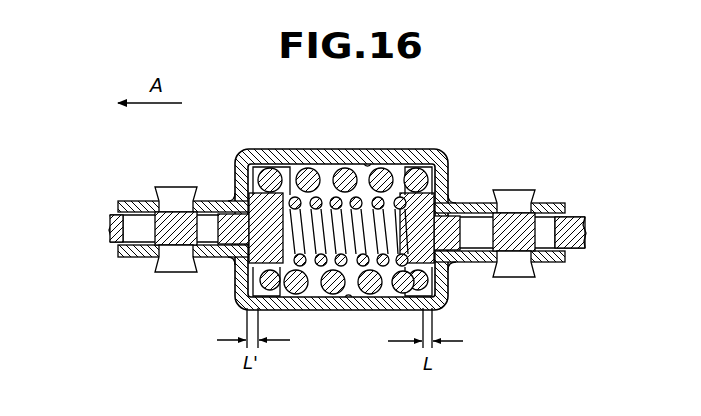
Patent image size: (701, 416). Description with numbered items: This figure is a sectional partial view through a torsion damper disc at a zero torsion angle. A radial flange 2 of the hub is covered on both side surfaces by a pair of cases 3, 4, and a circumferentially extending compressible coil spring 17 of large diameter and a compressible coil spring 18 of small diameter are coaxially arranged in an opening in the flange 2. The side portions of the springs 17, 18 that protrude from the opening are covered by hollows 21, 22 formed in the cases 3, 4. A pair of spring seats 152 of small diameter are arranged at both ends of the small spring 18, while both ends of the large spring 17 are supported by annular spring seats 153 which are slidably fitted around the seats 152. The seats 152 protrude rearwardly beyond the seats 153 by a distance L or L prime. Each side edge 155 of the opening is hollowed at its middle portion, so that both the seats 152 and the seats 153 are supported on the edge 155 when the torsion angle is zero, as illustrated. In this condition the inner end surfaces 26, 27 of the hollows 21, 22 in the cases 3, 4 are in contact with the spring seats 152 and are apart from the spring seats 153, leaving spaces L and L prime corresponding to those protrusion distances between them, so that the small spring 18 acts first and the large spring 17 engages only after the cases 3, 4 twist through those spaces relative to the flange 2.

The radial flange 2 is at (106, 223).
The case 3 is at (117, 203).
The case 4 is at (117, 251).
The compressible coil spring 17 is at (306, 168).
The compressible coil spring 18 is at (364, 196).
The hollow 21 is at (336, 200).
The hollow 22 is at (353, 298).
The inner end surface 26 is at (240, 172).
The inner end surface 27 is at (237, 290).
The spring seat 152 is at (449, 204).
The annular spring seat 153 is at (268, 168).
The side edge 155 is at (232, 258).